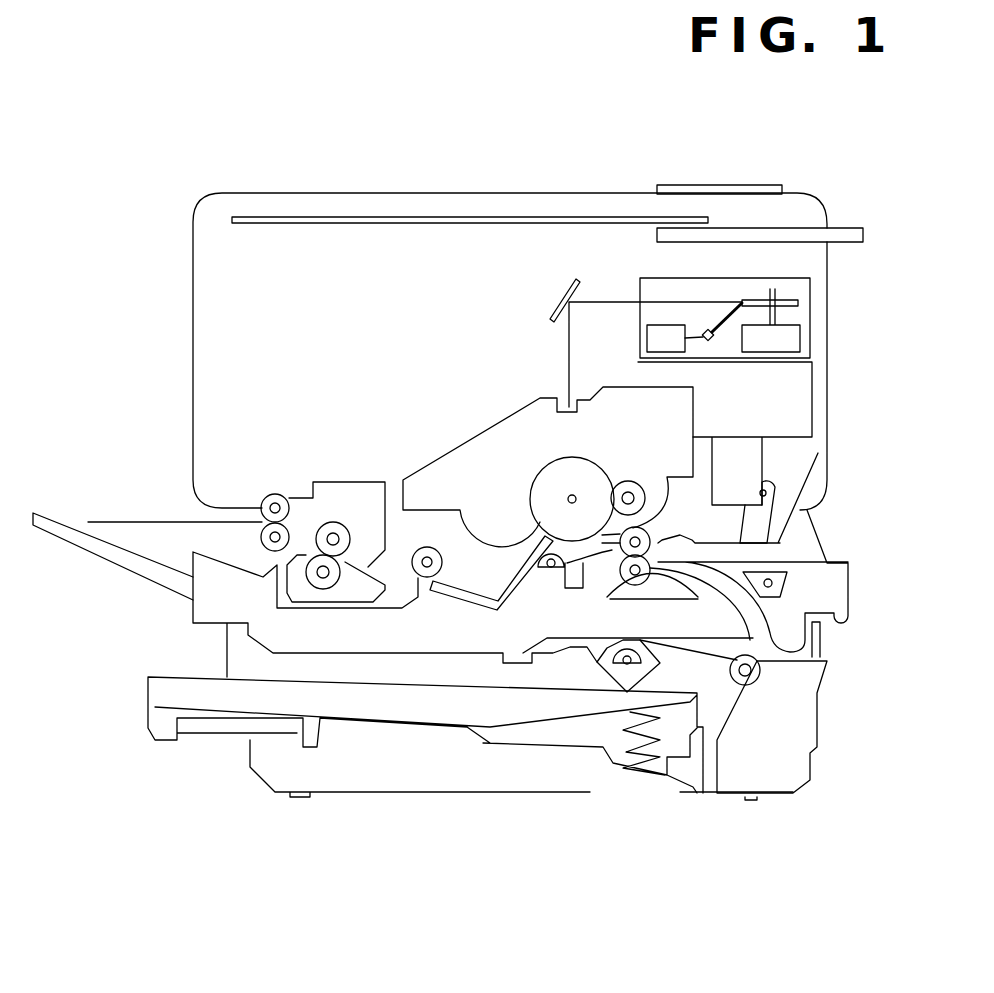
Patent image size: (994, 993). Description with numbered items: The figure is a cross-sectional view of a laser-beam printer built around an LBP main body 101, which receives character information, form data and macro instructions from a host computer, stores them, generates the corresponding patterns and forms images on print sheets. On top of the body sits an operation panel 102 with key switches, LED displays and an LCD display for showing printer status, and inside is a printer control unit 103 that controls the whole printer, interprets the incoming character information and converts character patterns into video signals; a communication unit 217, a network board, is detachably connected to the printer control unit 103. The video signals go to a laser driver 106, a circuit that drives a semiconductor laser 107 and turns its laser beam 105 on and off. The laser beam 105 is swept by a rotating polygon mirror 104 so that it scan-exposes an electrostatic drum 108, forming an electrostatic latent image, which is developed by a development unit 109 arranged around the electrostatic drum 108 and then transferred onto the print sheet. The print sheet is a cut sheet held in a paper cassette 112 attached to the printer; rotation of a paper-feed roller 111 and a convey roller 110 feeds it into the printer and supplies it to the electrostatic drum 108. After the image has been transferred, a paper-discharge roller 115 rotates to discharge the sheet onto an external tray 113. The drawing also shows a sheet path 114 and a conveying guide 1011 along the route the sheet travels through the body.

The LBP main body 101 is at (310, 193).
The operation panel 102 is at (720, 185).
The printer control unit 103 is at (442, 217).
The communication unit 217 is at (845, 228).
The rotating polygon mirror 104 is at (802, 302).
The laser beam 105 is at (605, 302).
The laser driver 106 is at (652, 340).
The semiconductor laser 107 is at (716, 340).
The electrostatic drum 108 is at (543, 478).
The development unit 109 is at (442, 467).
The convey roller 110 is at (758, 677).
The paper-feed roller 111 is at (617, 657).
The paper cassette 112 is at (147, 727).
The external tray 113 is at (115, 565).
The sheet conveying path 114 is at (130, 521).
The paper-discharge roller 115 is at (333, 522).
The conveying guide 1011 is at (631, 592).